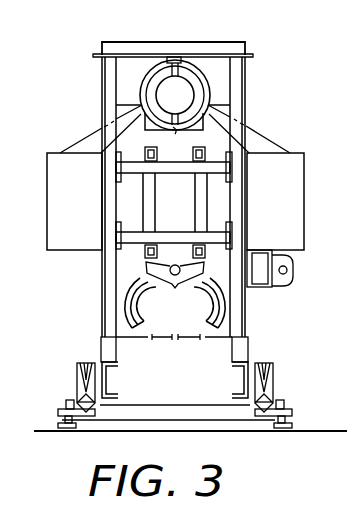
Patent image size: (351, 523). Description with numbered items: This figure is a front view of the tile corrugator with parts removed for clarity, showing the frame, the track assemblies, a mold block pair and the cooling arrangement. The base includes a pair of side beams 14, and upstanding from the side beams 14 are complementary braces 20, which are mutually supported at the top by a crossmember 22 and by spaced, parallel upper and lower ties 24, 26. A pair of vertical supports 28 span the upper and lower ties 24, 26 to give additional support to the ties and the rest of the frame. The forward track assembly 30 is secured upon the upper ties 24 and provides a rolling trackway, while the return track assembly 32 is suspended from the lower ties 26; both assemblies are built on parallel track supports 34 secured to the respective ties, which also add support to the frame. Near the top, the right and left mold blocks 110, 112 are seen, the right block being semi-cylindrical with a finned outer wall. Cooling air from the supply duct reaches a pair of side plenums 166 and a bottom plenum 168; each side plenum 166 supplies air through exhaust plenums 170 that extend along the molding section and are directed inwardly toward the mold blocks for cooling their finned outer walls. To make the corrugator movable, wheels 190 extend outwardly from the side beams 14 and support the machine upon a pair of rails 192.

The crossmember 22 is at (195, 42).
The braces 20 is at (101, 86).
The right mold block 110 is at (197, 77).
The left mold block 112 is at (141, 85).
The forward track assembly 30 is at (203, 136).
The exhaust plenums 170 is at (262, 143).
The side plenums 166 is at (93, 204).
The upper ties 24 is at (128, 173).
The lower ties 26 is at (116, 238).
The track supports 34 is at (145, 152).
The vertical supports 28 is at (198, 196).
The return track assembly 32 is at (209, 262).
The bottom plenum 168 is at (199, 389).
The side beams 14 is at (118, 381).
The wheels 190 is at (76, 382).
The rails 192 is at (90, 422).